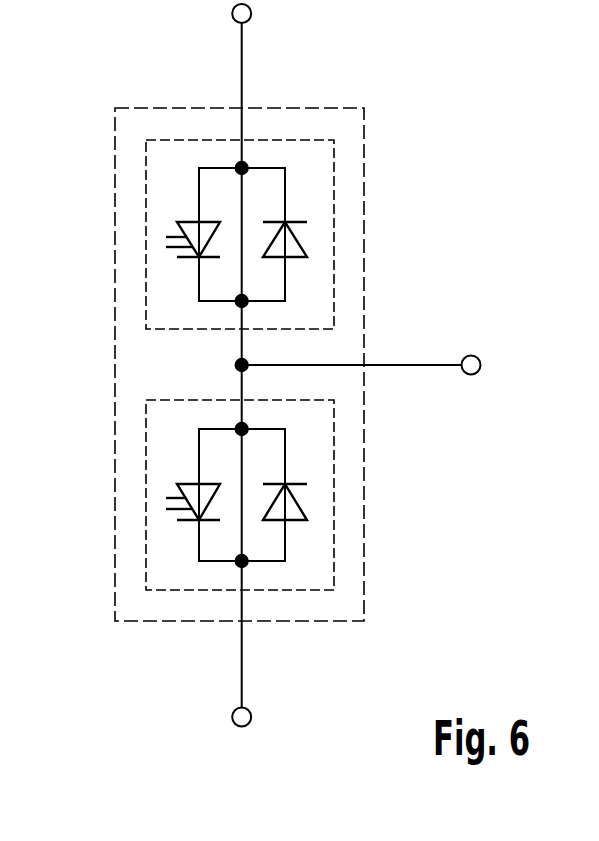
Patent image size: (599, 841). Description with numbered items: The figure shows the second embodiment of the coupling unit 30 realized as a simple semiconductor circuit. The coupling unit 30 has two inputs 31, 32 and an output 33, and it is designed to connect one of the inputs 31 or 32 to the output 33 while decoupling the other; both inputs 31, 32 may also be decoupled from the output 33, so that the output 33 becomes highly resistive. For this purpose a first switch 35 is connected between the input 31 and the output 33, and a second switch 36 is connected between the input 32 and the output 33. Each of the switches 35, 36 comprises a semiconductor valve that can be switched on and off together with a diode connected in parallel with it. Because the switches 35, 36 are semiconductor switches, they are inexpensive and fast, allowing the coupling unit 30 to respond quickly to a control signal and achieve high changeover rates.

The coupling unit 30 is at (364, 143).
The first input 31 is at (252, 13).
The second input 32 is at (252, 716).
The output 33 is at (471, 355).
The first switch 35 is at (145, 181).
The second switch 36 is at (145, 443).